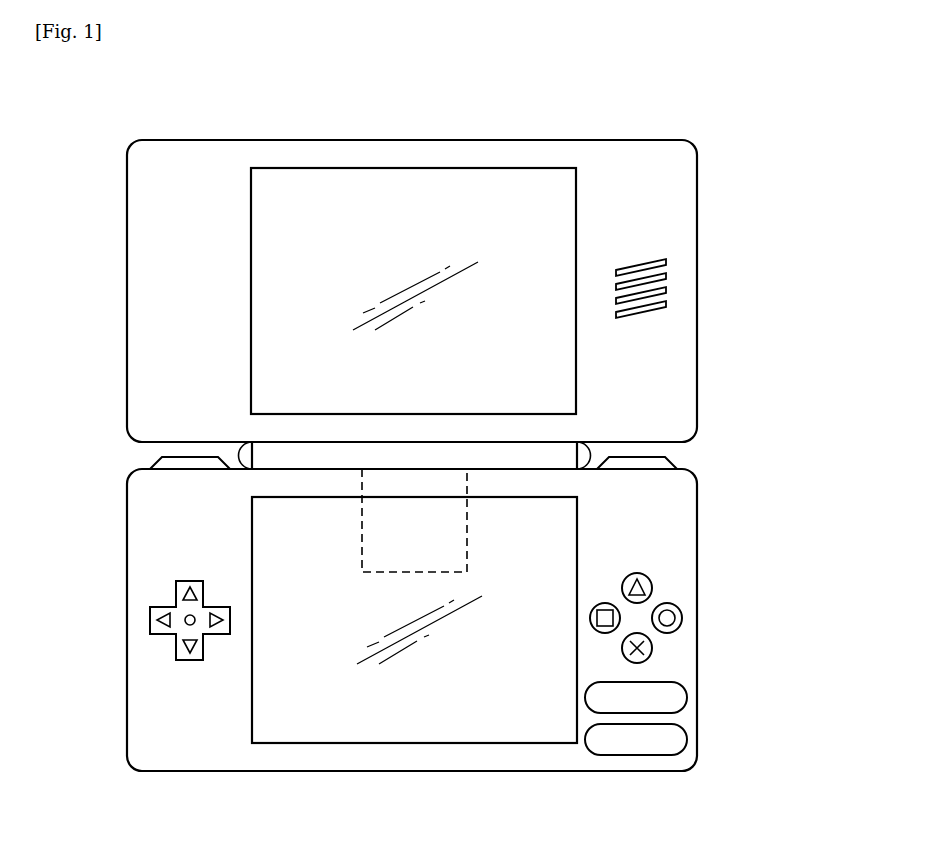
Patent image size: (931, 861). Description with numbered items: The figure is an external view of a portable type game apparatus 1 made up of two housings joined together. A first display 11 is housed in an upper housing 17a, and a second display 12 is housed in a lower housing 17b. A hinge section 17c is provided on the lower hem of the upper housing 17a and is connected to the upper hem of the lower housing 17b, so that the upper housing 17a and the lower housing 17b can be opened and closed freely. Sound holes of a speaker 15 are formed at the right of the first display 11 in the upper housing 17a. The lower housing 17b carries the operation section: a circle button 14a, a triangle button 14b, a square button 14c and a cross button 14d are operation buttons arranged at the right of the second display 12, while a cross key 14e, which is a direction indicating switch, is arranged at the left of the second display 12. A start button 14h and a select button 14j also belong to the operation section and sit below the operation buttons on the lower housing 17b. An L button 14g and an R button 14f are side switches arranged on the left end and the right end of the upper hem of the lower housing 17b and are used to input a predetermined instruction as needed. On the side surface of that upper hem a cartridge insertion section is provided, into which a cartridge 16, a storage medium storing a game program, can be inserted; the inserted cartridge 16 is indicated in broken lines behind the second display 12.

The game apparatus 1 is at (730, 251).
The first display 11 is at (322, 168).
The second display 12 is at (290, 745).
The circle button 14a is at (682, 618).
The triangle button 14b is at (640, 573).
The square button 14c is at (605, 603).
The cross button 14d is at (652, 648).
The cross key 14e is at (150, 620).
The R button 14f is at (672, 458).
The L button 14g is at (160, 462).
The start button 14h is at (687, 697).
The select button 14j is at (687, 740).
The speaker 15 is at (638, 264).
The cartridge 16 is at (350, 532).
The upper housing 17a is at (604, 140).
The lower housing 17b is at (538, 772).
The hinge section 17c is at (585, 452).